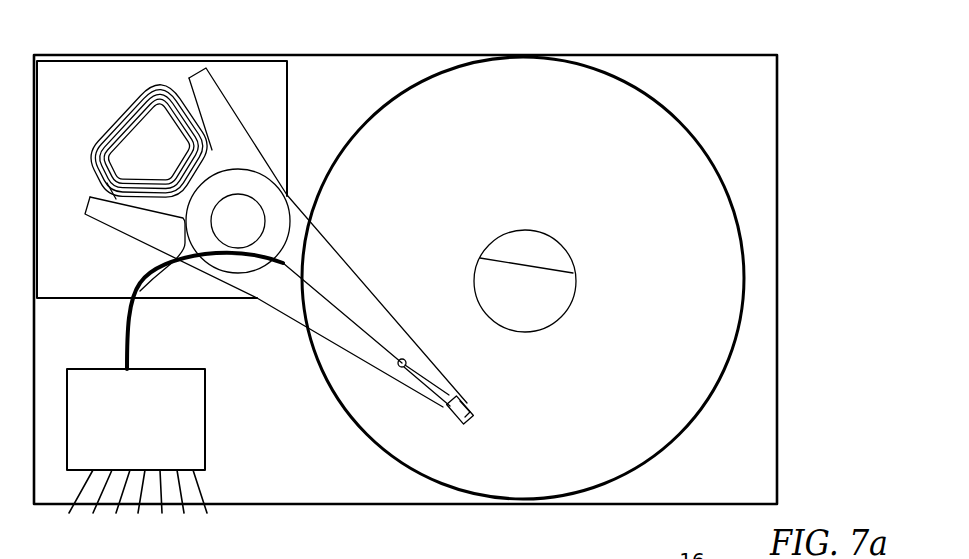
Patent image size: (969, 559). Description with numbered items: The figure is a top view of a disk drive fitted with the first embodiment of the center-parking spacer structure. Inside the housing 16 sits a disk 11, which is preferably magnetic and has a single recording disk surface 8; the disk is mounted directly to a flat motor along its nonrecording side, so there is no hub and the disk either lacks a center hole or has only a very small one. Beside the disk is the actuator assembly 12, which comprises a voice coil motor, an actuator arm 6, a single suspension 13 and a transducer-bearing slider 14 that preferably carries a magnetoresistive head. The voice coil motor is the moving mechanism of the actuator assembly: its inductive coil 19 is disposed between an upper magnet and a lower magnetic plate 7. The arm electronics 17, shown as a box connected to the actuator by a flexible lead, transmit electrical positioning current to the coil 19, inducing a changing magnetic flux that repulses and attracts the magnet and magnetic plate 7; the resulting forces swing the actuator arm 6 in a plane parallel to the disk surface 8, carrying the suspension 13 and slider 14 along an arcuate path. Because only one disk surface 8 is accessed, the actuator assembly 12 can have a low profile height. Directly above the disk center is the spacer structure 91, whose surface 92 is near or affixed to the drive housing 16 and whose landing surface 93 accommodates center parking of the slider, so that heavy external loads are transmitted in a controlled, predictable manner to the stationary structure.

The housing 16 is at (676, 53).
The disk 11 is at (680, 120).
The disk surface 8 is at (472, 145).
The landing surface 93 is at (559, 316).
The surface 92 is at (566, 260).
The spacer structure 91 is at (556, 217).
The lower magnetic plate 7 is at (49, 280).
The inductive coil 19 is at (112, 128).
The actuator arm 6 is at (230, 119).
The actuator assembly 12 is at (272, 159).
The suspension 13 is at (366, 290).
The transducer-bearing slider 14 is at (460, 397).
The arm electronics 17 is at (207, 418).